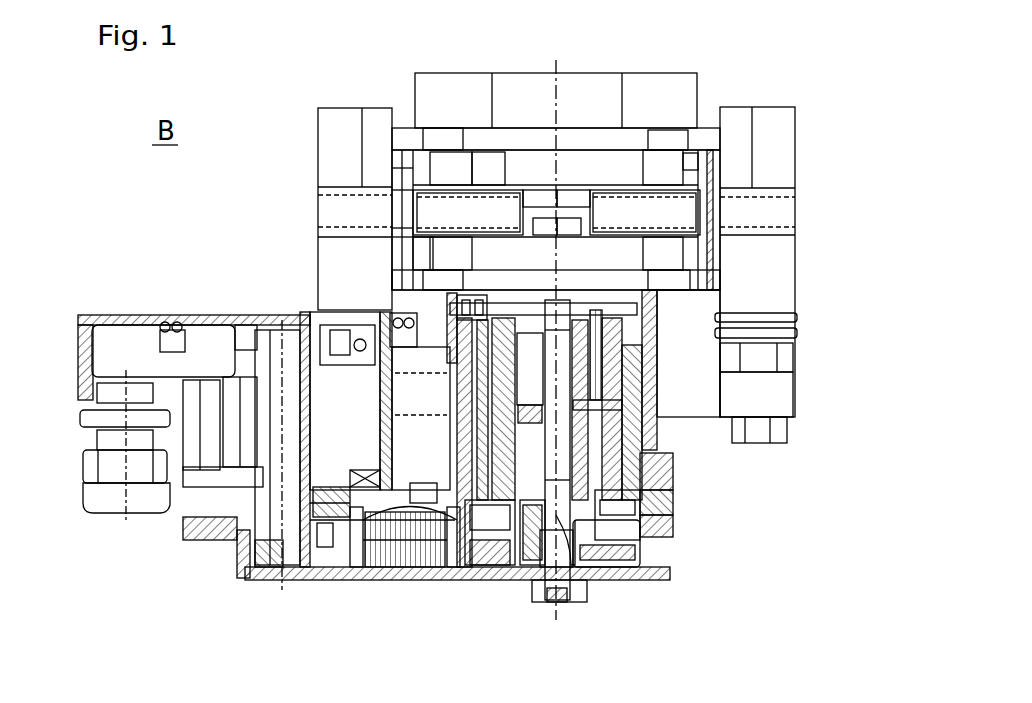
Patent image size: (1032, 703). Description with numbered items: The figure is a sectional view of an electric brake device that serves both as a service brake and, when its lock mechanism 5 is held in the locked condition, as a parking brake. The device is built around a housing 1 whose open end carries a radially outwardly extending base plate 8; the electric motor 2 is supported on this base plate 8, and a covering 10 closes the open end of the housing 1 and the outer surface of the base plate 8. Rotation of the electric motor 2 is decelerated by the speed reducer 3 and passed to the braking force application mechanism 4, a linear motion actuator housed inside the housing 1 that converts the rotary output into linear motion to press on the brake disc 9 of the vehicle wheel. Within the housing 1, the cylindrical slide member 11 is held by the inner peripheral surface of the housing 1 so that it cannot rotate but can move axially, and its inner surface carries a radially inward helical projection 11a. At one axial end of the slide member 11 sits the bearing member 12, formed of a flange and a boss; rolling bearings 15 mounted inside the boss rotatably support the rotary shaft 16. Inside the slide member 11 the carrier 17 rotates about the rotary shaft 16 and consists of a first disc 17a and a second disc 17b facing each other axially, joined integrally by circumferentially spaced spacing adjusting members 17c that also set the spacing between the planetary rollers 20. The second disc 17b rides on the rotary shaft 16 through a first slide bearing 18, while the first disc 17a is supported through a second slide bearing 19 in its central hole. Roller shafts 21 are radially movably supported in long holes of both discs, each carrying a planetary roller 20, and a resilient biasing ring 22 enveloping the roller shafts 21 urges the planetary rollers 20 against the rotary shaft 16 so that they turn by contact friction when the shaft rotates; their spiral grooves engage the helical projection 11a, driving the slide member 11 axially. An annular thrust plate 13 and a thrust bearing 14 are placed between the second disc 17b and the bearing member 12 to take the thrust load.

The housing 1 is at (675, 488).
The electric motor 2 is at (213, 330).
The speed reducer 3 is at (472, 580).
The braking force application mechanism 4 is at (647, 553).
The lock mechanism 5 is at (392, 567).
The base plate 8 is at (185, 520).
The brake disc 9 is at (805, 235).
The covering 10 is at (585, 600).
The cylindrical slide member 11 is at (760, 345).
The helical projection 11a is at (730, 356).
The bearing member 12 is at (673, 513).
The annular thrust plate 13 is at (660, 440).
The thrust bearing 14 is at (673, 465).
The rolling bearings 15 is at (673, 540).
The rotary shaft 16 is at (620, 315).
The carrier 17 is at (447, 340).
The first disc 17a is at (507, 303).
The second disc 17b is at (525, 580).
The spacing adjusting member 17c is at (318, 312).
The first slide bearing 18 is at (770, 408).
The second slide bearing 19 is at (640, 305).
The planetary rollers 20 is at (562, 604).
The roller shafts 21 is at (740, 318).
The resilient biasing ring 22 is at (480, 300).